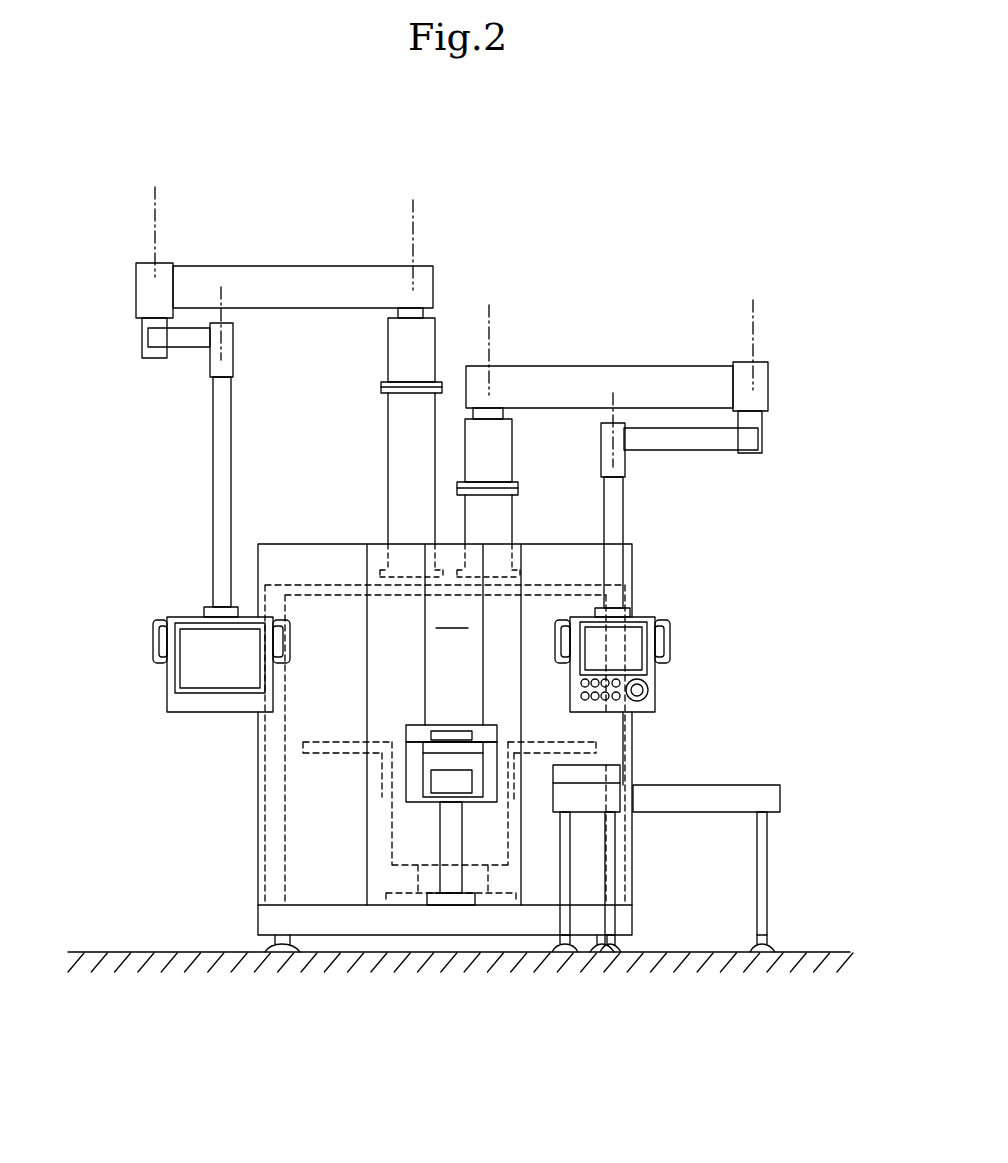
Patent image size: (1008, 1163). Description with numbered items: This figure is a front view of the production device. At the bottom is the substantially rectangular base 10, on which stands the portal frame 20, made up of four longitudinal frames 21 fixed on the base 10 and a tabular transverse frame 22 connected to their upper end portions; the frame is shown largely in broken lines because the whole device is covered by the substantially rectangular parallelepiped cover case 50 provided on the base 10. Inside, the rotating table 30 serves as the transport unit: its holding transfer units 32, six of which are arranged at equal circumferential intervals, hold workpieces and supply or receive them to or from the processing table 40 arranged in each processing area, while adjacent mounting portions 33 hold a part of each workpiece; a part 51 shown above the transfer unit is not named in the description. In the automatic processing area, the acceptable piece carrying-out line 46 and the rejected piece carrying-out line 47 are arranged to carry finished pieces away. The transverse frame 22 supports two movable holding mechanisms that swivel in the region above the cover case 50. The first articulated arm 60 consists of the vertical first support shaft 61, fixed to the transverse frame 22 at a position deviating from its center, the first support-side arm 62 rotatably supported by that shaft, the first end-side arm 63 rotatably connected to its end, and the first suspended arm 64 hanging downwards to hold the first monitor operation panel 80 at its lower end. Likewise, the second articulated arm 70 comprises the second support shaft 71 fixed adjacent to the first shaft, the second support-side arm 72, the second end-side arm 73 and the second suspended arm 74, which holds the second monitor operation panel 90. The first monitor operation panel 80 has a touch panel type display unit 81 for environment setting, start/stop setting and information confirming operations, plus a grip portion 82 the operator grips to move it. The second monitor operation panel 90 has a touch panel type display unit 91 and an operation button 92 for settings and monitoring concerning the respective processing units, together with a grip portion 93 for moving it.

The base 10 is at (258, 918).
The portal frame 20 is at (397, 678).
The longitudinal frames 21 is at (290, 718).
The transverse frame 22 is at (333, 585).
The rotating table 30 is at (405, 771).
The holding transfer units 32 is at (478, 742).
The mounting portions 33 is at (455, 737).
The processing table 40 is at (435, 762).
The acceptable piece carrying-out line 46 is at (585, 812).
The rejected piece carrying-out line 47 is at (740, 785).
The cover case 50 is at (258, 808).
The mounting plate 51 is at (410, 735).
The first articulated arm 60 is at (274, 377).
The first support shaft 61 is at (400, 314).
The first support-side arm 62 is at (330, 266).
The first end-side arm 63 is at (185, 340).
The first suspended arm 64 is at (215, 462).
The second articulated arm 70 is at (617, 436).
The second support shaft 71 is at (497, 412).
The second support-side arm 72 is at (560, 366).
The second end-side arm 73 is at (705, 443).
The second suspended arm 74 is at (622, 518).
The first monitor operation panel 80 is at (182, 700).
The touch panel type display unit 81 is at (193, 675).
The grip portion 82 is at (155, 633).
The second monitor operation panel 90 is at (666, 694).
The touch panel type display unit 91 is at (636, 637).
The operation button 92 is at (664, 715).
The grip portion 93 is at (670, 653).